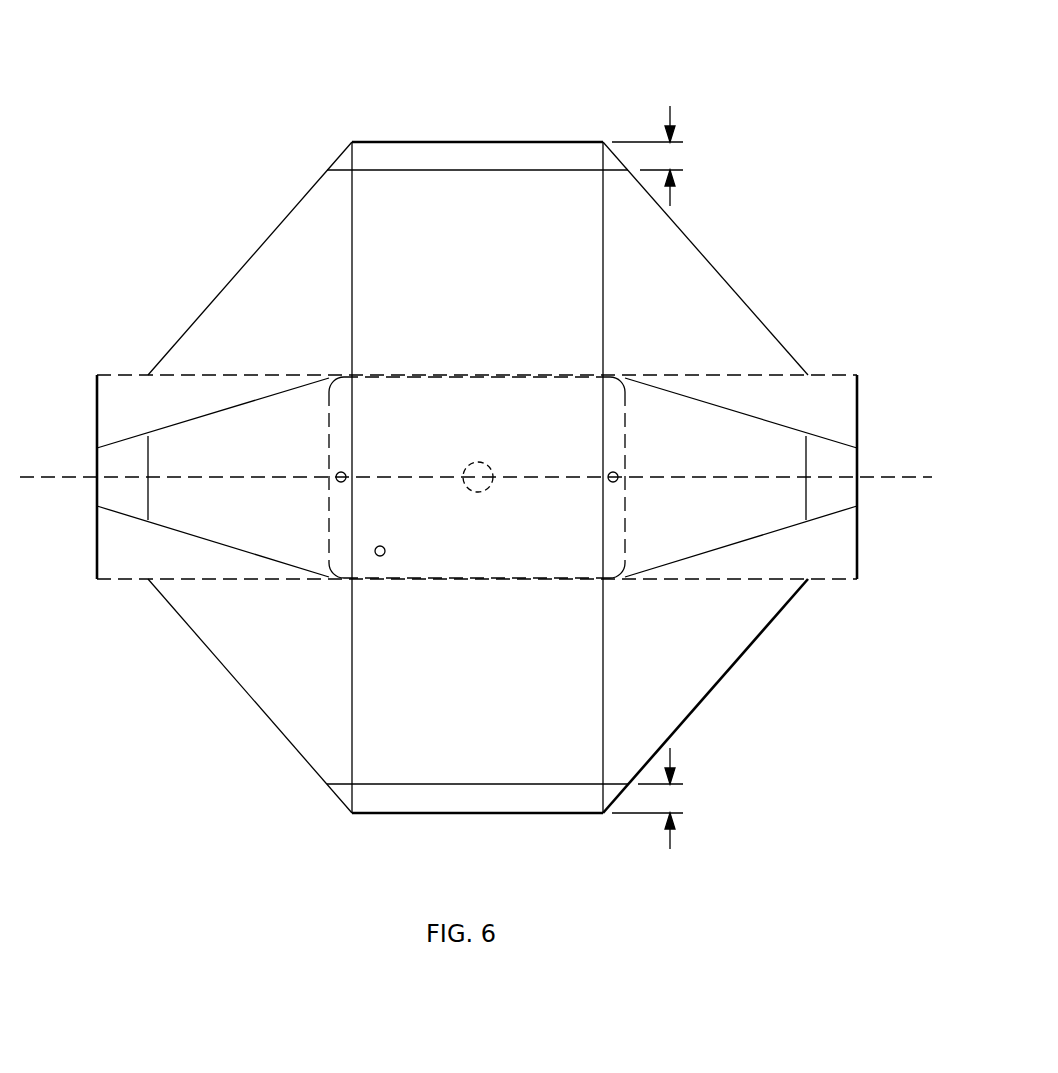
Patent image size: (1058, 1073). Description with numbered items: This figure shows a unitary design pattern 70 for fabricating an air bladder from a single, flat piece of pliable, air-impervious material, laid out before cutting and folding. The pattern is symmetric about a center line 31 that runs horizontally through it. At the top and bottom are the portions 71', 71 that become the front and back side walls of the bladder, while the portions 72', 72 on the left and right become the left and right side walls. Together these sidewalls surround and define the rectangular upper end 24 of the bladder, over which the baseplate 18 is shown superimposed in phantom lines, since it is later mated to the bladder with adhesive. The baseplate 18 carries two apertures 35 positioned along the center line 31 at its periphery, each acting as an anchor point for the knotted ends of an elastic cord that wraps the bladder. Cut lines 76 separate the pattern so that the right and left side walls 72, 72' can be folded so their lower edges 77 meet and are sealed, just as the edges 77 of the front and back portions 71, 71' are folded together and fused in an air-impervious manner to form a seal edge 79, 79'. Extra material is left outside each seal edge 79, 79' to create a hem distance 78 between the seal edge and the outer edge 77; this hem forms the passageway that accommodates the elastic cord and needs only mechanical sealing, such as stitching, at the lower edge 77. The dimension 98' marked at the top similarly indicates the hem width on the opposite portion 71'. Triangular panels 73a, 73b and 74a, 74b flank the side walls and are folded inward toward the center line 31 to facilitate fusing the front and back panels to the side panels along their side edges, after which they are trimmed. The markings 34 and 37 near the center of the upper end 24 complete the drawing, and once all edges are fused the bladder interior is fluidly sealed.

The unitary design pattern 70 is at (652, 70).
The portion forming front side wall 71 is at (477, 849).
The portion forming back side wall 71' is at (477, 107).
The edges 77 is at (403, 141).
The cut lines 76 is at (266, 373).
The triangular panel 74b is at (252, 258).
The triangular panel 73b is at (703, 258).
The triangular panel 74a is at (256, 700).
The triangular panel 73a is at (706, 700).
The seal edge 79 is at (477, 757).
The seal edge 79' is at (477, 200).
The hem distance 78 is at (672, 842).
The upper flange height 98' is at (676, 148).
The center line 31 is at (60, 475).
The portion forming left side wall 72' is at (173, 477).
The portion forming right side wall 72 is at (780, 477).
The upper end 24 is at (460, 580).
The baseplate 18 is at (316, 442).
The central aperture 34 is at (486, 472).
The apertures 35 is at (342, 482).
The locating hole 37 is at (378, 546).